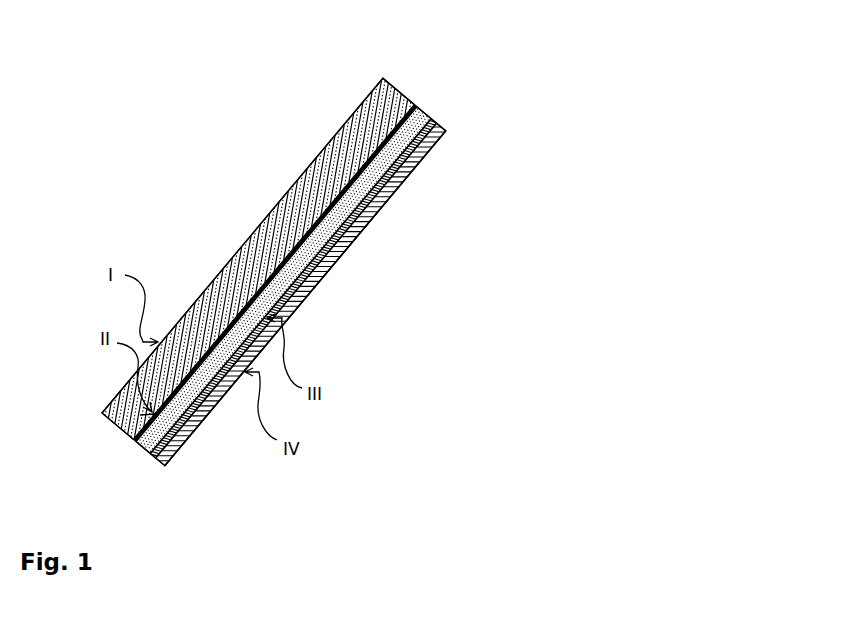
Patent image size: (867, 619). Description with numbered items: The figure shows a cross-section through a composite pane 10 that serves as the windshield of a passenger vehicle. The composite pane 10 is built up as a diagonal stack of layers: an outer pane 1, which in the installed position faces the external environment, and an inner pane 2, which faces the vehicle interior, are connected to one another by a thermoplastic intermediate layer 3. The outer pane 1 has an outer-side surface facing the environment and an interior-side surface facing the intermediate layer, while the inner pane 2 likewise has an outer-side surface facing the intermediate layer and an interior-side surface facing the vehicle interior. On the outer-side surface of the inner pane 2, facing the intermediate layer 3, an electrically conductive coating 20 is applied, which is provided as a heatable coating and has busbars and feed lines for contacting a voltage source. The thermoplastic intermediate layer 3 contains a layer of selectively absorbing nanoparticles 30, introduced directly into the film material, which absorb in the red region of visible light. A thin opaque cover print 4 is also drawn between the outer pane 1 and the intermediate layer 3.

The composite pane 10 is at (162, 182).
The outer pane 1 is at (223, 293).
The opaque cover print 4 is at (413, 113).
The thermoplastic intermediate layer 3 is at (322, 243).
The layer of selectively absorbing nanoparticles 30 is at (412, 119).
The inner pane 2 is at (442, 126).
The electrically conductive coating 20 is at (412, 173).